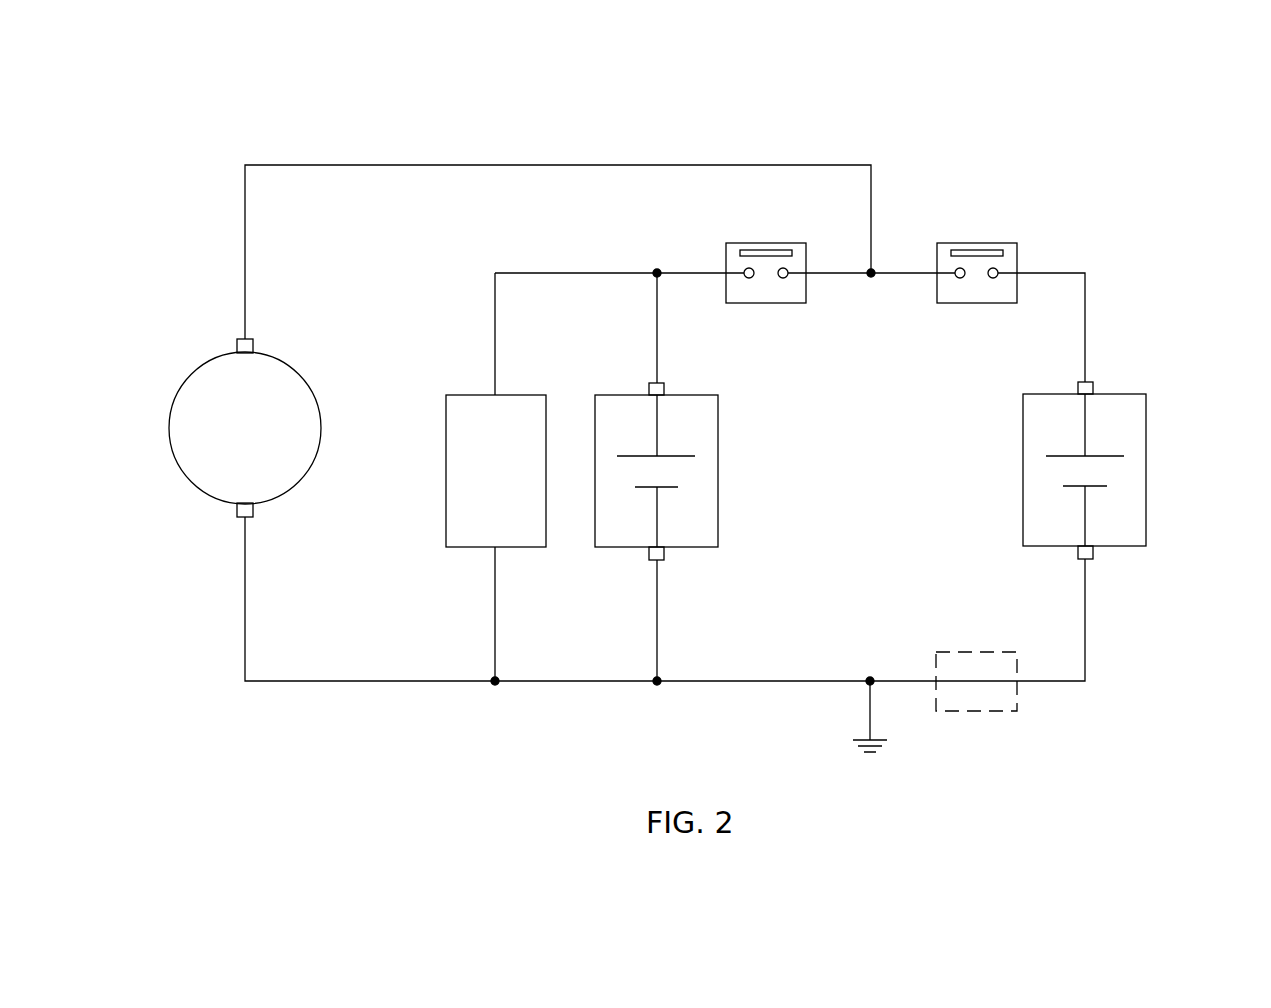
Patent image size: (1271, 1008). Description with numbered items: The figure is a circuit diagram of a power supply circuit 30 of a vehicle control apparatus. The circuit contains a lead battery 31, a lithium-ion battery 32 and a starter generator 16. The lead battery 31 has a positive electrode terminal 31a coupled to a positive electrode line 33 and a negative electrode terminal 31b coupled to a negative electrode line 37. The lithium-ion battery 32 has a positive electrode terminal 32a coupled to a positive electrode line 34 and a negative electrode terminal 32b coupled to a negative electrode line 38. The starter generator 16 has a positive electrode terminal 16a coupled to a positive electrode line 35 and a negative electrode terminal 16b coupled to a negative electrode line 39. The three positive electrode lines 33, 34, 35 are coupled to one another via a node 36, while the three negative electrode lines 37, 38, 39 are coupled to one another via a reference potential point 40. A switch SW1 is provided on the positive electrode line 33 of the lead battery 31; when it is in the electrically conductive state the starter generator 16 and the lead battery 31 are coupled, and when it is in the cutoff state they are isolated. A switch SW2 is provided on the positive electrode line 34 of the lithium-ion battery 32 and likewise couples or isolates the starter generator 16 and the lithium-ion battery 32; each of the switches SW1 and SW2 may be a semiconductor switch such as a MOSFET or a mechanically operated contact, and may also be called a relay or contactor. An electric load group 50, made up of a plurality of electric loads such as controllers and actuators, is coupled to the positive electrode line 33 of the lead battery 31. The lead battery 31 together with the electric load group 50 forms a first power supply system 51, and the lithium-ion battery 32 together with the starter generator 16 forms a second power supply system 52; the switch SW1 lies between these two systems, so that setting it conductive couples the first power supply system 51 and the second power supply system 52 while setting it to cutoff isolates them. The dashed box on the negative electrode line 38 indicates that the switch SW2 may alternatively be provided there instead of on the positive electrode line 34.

The power supply circuit 30 is at (175, 133).
The starter generator 16 is at (318, 405).
The positive electrode terminal 16a is at (242, 338).
The negative electrode terminal 16b is at (242, 518).
The positive electrode line 35 is at (511, 164).
The negative electrode line 39 is at (243, 640).
The first power supply system 51 is at (446, 323).
The electric load group 50 is at (442, 514).
The lead battery 31 is at (720, 472).
The positive electrode terminal 31a is at (655, 381).
The negative electrode terminal 31b is at (648, 560).
The positive electrode line 33 is at (583, 272).
The switch SW1 is at (763, 304).
The node 36 is at (871, 280).
The positive electrode line 34 is at (902, 272).
The switch SW2 is at (963, 304).
The second power supply system 52 is at (1135, 302).
The lithium-ion battery 32 is at (1148, 472).
The positive electrode terminal 32a is at (1095, 388).
The negative electrode terminal 32b is at (1095, 556).
The negative electrode line 37 is at (660, 620).
The negative electrode line 38 is at (1040, 680).
The reference potential point 40 is at (866, 686).